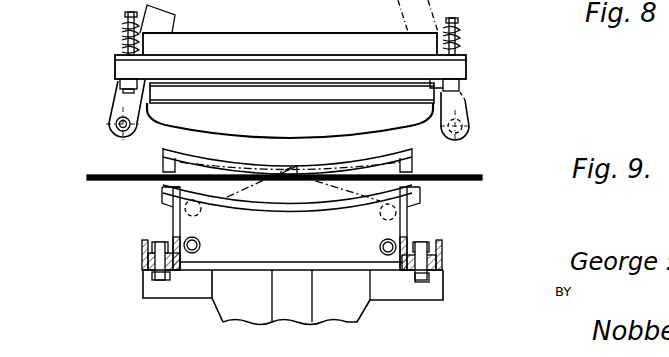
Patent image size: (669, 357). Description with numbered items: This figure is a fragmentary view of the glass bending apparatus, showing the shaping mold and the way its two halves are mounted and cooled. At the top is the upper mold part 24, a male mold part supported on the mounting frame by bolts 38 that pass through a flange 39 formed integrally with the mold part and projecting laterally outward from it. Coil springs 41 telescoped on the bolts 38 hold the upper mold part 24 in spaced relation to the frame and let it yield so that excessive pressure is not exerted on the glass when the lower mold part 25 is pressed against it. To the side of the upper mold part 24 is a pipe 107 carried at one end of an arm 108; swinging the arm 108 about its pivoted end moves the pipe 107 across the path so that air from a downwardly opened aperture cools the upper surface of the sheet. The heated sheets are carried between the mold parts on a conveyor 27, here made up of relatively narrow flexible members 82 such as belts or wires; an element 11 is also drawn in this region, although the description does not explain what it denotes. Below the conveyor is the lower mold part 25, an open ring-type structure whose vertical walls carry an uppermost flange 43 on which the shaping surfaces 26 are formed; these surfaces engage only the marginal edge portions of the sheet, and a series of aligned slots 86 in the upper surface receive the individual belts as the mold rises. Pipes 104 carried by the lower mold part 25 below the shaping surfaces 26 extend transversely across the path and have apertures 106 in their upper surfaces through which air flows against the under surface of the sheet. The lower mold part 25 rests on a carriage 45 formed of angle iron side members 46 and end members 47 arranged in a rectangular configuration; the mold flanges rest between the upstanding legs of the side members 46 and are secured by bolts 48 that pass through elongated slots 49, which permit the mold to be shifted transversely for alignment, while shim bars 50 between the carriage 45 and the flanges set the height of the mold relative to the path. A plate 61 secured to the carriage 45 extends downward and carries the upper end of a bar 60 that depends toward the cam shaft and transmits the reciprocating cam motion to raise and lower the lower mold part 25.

The upper mold part 24 is at (227, 117).
The bolts 38 is at (126, 19).
The coil springs 41 is at (125, 34).
The flange 39 is at (124, 69).
The arm 108 is at (128, 104).
The pipe 107 is at (115, 126).
The conveyor 27 is at (100, 172).
The flexible members 82 is at (452, 178).
The upper curved guide 11 is at (248, 159).
The shaping surfaces 26 is at (303, 206).
The lower mold part 25 is at (163, 200).
The flange 43 is at (165, 200).
The slots 86 is at (178, 224).
The apertures 106 is at (200, 240).
The pipes 104 is at (201, 248).
The side members 46 is at (142, 251).
The elongated slots 49 is at (147, 259).
The bolts 48 is at (153, 276).
The end members 47 is at (192, 286).
The carriage 45 is at (158, 285).
The plate 61 is at (235, 310).
The bar 60 is at (297, 309).
The shim bars 50 is at (413, 273).